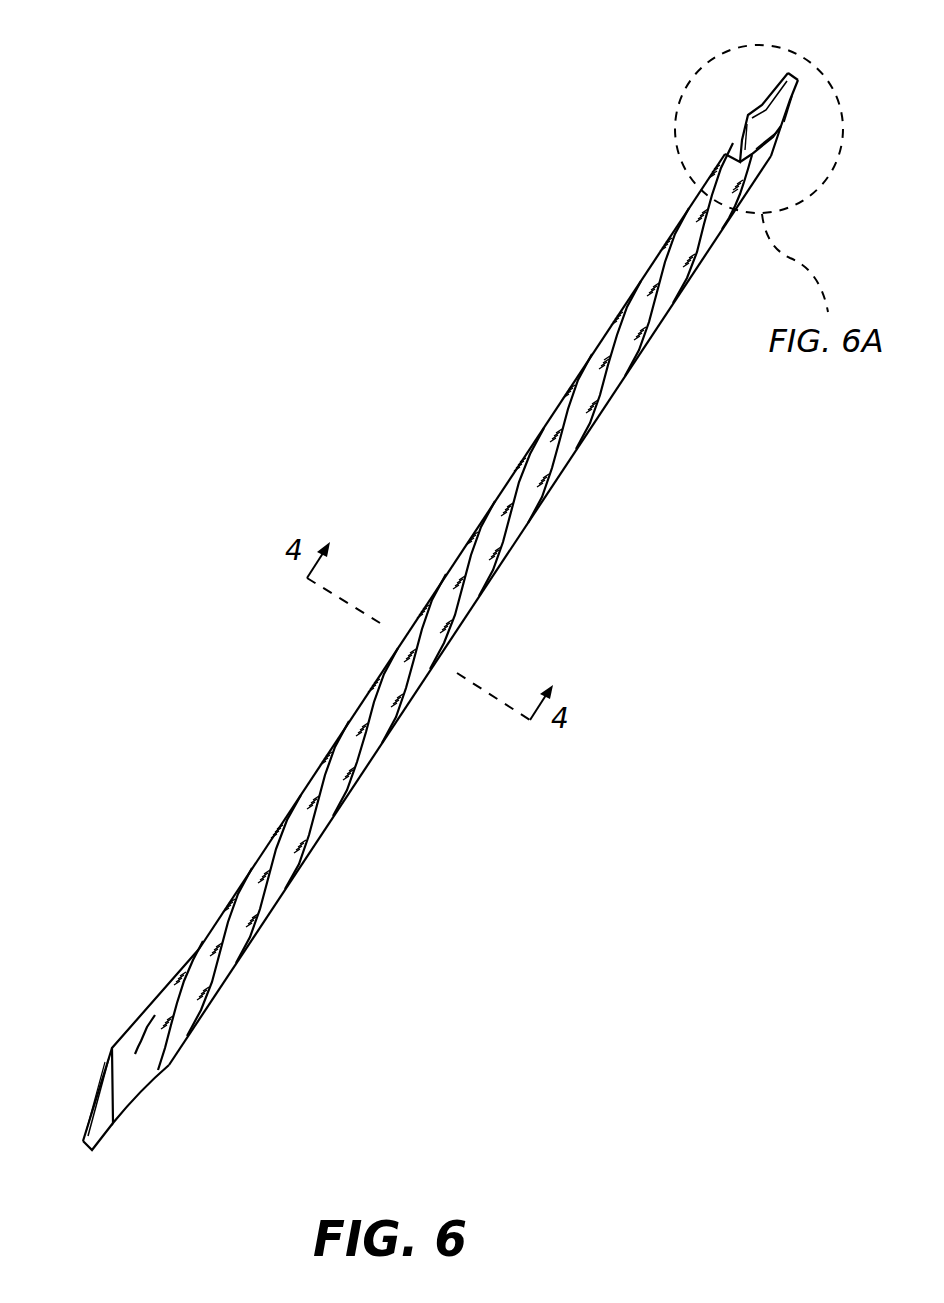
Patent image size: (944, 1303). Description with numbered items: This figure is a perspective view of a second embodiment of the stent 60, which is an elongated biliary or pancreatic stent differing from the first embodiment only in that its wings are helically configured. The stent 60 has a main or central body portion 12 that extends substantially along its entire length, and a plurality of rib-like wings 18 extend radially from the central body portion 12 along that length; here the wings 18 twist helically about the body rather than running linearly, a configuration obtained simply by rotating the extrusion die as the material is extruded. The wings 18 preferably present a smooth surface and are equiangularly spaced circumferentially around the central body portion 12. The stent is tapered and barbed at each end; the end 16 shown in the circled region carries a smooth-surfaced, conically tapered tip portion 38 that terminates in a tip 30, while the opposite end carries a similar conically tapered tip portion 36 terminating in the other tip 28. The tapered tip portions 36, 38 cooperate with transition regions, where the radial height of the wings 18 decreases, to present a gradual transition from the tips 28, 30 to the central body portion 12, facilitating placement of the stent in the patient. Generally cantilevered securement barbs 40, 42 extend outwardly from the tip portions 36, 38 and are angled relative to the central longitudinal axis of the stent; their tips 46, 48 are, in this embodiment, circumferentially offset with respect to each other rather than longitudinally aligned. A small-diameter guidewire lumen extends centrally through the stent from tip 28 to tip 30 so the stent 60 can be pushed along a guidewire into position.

The second embodiment of the stent 60 is at (483, 340).
The main or central body portion 12 is at (502, 557).
The rib-like wings 18 is at (380, 731).
The end 16 is at (801, 144).
The securement barb 42 is at (752, 116).
The tip 30 is at (797, 73).
The tip portion 38 is at (790, 98).
The tip of securement barb 48 is at (740, 161).
The tip of securement barb 46 is at (111, 1047).
The tip portion 36 is at (90, 1134).
The securement barb 40 is at (99, 1090).
The tip 28 is at (82, 1150).